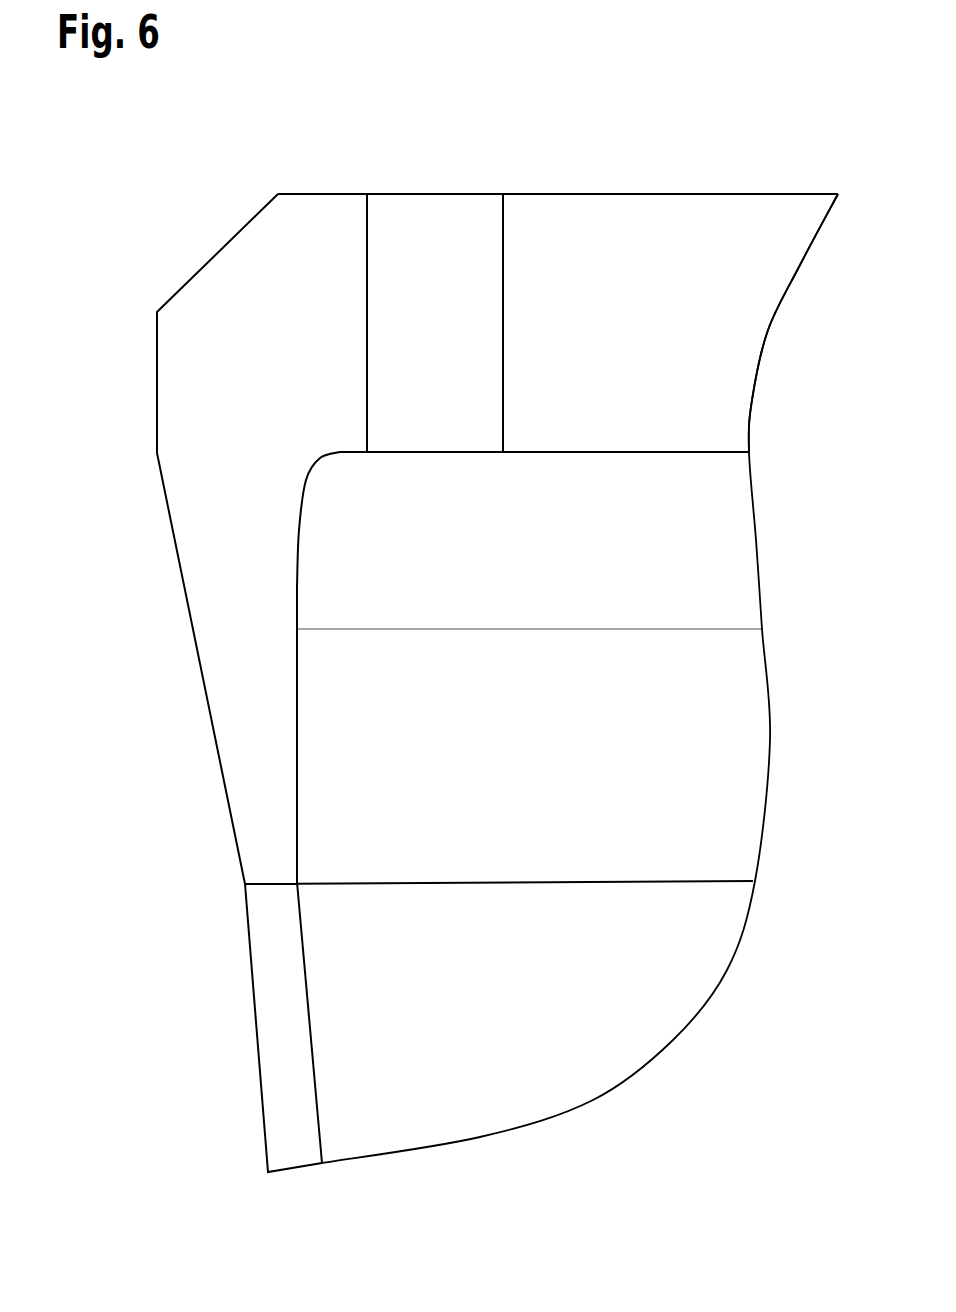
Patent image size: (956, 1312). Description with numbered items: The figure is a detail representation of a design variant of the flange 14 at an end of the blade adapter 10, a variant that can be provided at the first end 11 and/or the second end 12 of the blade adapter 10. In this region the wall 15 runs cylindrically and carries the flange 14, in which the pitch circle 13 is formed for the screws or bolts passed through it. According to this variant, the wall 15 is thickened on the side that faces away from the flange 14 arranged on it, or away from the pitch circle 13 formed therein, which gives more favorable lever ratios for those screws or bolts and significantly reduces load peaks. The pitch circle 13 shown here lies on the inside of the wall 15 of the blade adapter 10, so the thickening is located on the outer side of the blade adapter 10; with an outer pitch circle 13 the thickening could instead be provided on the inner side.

The blade adapter 10 is at (192, 1062).
The first end 11 is at (638, 167).
The second end 12 is at (793, 323).
The pitch circle 13 is at (422, 220).
The flange 14 is at (313, 220).
The wall 15 is at (248, 953).